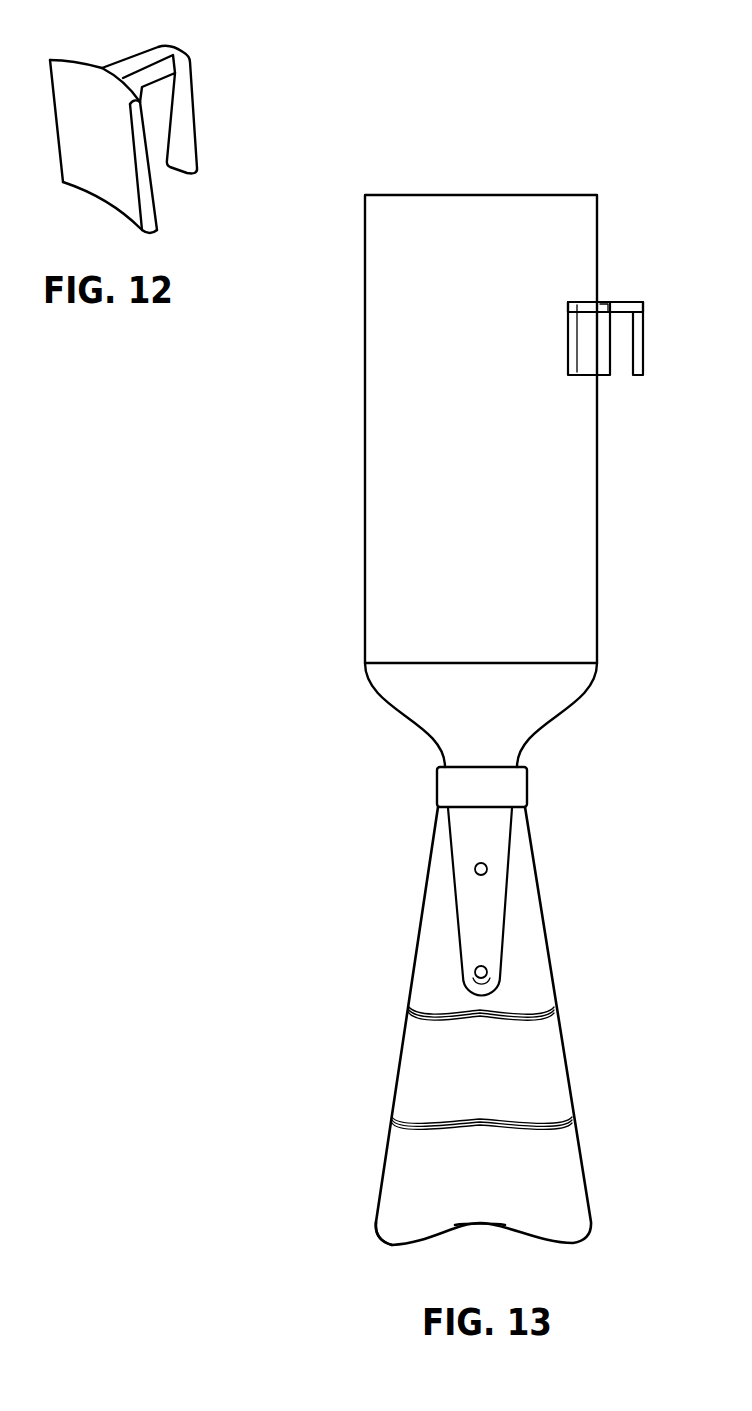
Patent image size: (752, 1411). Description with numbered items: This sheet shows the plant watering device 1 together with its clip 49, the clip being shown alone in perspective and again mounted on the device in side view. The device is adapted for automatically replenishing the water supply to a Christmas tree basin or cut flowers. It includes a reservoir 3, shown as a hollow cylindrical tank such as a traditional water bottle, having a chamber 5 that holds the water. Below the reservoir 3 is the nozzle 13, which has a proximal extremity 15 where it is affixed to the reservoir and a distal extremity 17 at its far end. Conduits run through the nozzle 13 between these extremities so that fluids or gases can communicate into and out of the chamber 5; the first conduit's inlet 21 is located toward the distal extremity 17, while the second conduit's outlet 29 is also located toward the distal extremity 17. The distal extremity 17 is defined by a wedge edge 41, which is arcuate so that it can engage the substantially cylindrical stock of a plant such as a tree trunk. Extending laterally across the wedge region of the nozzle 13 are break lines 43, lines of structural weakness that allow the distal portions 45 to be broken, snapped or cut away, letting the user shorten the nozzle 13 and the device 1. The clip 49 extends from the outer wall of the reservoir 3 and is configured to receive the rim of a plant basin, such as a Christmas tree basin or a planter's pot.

In FIG. 13, the plant watering device 1 is at (483, 731).
In FIG. 13, the reservoir 3 is at (598, 474).
In FIG. 13, the chamber 5 is at (573, 593).
In FIG. 13, the nozzle 13 is at (543, 910).
In FIG. 13, the proximal extremity 15 is at (437, 768).
In FIG. 13, the distal extremity 17 is at (382, 1243).
In FIG. 13, the inlet 21 is at (475, 869).
In FIG. 13, the outlet 29 is at (488, 973).
In FIG. 13, the wedge edge 41 is at (463, 1227).
In FIG. 13, the break lines 43 is at (408, 1007).
In FIG. 13, the distal portions 45 is at (415, 1062).
In FIG. 12, the clip 49 is at (184, 55).
In FIG. 13, the clip 49 is at (645, 303).